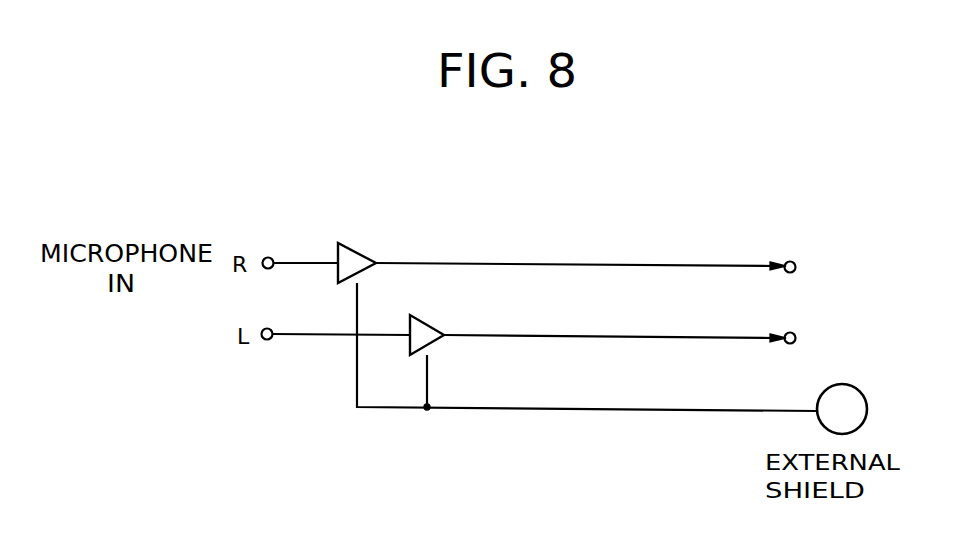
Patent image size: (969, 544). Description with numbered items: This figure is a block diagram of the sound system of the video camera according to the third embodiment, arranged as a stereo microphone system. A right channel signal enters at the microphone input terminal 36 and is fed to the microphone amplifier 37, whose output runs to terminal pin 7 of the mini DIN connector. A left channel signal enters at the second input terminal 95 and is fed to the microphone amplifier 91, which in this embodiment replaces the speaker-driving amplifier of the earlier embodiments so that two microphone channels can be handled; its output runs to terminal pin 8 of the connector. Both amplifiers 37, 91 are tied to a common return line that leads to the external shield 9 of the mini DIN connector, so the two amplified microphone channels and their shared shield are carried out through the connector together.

The microphone input terminal 36 is at (268, 257).
The left channel microphone input terminal 95 is at (267, 340).
The microphone amplifier 37 is at (364, 243).
The microphone amplifier 91 is at (428, 318).
The terminal pin 7 is at (797, 267).
The terminal pin 8 is at (797, 338).
The external shield 9 is at (867, 404).